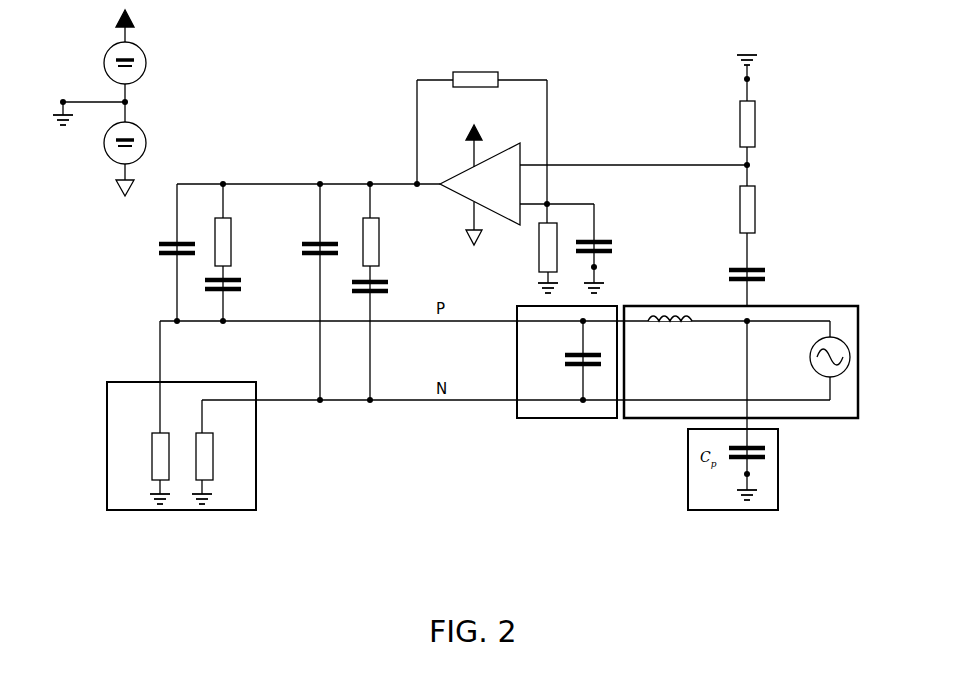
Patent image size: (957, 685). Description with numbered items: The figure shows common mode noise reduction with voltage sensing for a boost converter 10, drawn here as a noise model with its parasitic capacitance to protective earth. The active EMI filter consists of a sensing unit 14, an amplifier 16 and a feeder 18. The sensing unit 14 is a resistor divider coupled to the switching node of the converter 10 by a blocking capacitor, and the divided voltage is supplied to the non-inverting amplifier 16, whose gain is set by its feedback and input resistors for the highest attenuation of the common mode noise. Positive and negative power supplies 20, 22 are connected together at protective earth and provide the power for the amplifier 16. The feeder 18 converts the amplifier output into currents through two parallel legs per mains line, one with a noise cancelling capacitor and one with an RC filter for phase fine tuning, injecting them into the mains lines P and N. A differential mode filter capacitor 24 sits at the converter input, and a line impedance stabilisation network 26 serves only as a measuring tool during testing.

The boost converter 10 is at (813, 286).
The sensing unit 14 is at (794, 112).
The amplifier 16 is at (563, 114).
The feeder 18 is at (315, 170).
The positive power supply 20 is at (146, 63).
The negative power supply 22 is at (146, 145).
The differential mode filter capacitor 24 is at (508, 418).
The line impedance stabilisation network 26 is at (270, 441).